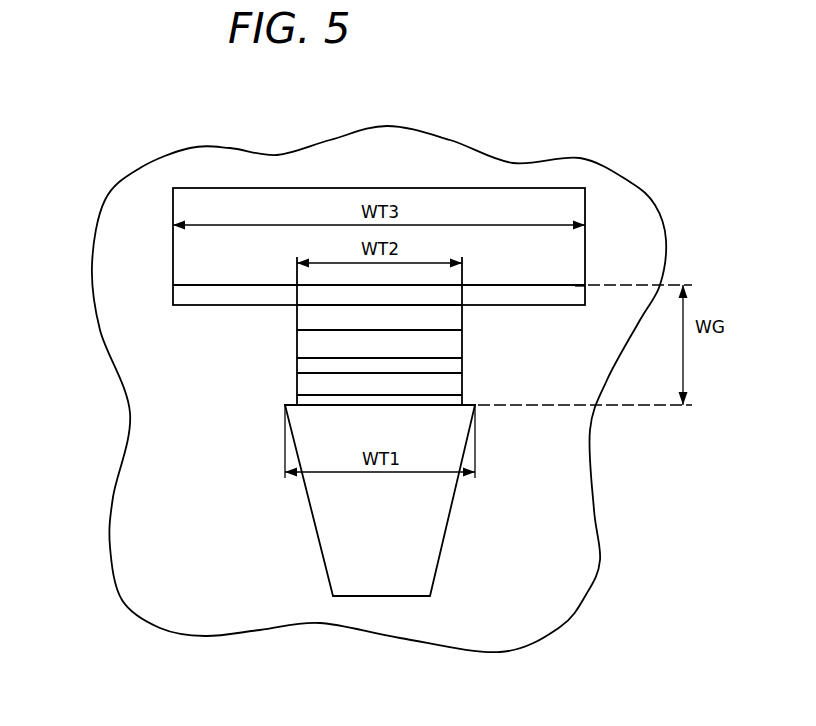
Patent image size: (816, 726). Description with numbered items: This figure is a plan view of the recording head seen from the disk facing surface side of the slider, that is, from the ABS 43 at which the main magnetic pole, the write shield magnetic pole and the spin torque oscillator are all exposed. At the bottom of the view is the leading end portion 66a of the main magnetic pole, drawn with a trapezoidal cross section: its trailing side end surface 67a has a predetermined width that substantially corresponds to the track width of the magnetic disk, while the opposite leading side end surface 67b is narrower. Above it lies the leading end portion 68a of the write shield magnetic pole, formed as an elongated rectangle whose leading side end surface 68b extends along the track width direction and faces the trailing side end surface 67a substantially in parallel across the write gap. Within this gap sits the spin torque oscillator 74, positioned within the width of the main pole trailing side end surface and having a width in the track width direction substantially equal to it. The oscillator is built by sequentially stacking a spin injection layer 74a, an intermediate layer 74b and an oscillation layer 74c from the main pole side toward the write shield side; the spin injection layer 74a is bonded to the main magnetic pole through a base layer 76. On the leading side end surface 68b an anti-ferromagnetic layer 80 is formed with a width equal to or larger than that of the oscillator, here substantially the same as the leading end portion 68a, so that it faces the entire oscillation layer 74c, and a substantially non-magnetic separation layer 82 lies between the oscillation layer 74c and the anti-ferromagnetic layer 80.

The ABS 43 is at (150, 408).
The leading end portion of the main magnetic pole 66a is at (432, 515).
The trailing side end surface 67a is at (296, 393).
The leading side end surface 67b is at (405, 597).
The leading end portion of the write shield magnetic pole 68a is at (528, 203).
The leading side end surface 68b is at (203, 288).
The spin torque oscillator 74 is at (278, 374).
The spin injection layer 74a is at (450, 385).
The intermediate layer 74b is at (453, 362).
The oscillation layer 74c is at (453, 342).
The base layer 76 is at (455, 398).
The anti-ferromagnetic layer 80 is at (575, 293).
The separation layer 82 is at (452, 317).